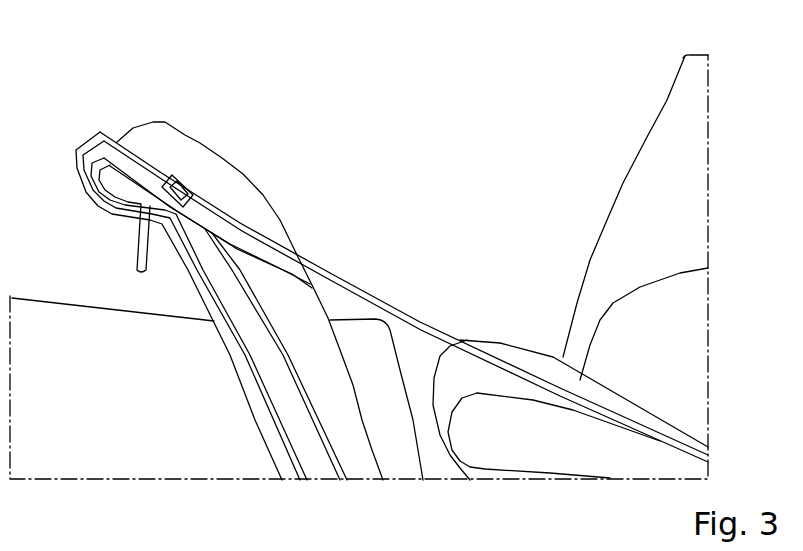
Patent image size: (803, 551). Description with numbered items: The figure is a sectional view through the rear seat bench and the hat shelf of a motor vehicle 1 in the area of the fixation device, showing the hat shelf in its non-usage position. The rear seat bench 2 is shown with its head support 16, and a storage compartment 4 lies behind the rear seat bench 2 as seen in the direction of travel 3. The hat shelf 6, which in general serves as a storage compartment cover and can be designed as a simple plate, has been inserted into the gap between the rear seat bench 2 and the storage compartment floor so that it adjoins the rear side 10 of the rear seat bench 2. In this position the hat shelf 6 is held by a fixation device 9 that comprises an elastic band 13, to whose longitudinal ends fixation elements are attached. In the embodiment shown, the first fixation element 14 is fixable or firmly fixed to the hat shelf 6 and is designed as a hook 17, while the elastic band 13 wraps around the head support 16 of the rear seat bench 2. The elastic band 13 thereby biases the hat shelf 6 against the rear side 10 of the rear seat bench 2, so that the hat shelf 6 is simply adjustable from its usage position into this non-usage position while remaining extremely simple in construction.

The motor vehicle 1 is at (501, 90).
The rear seat bench 2 is at (570, 300).
The direction of travel 3 is at (430, 163).
The storage compartment 4 is at (78, 281).
The hat shelf 6 is at (200, 160).
The fixation device 9 is at (369, 279).
The rear side 10 is at (463, 462).
The elastic band 13 is at (310, 268).
The first fixation element 14 is at (88, 141).
The head support 16 is at (693, 117).
The hook 17 is at (132, 146).